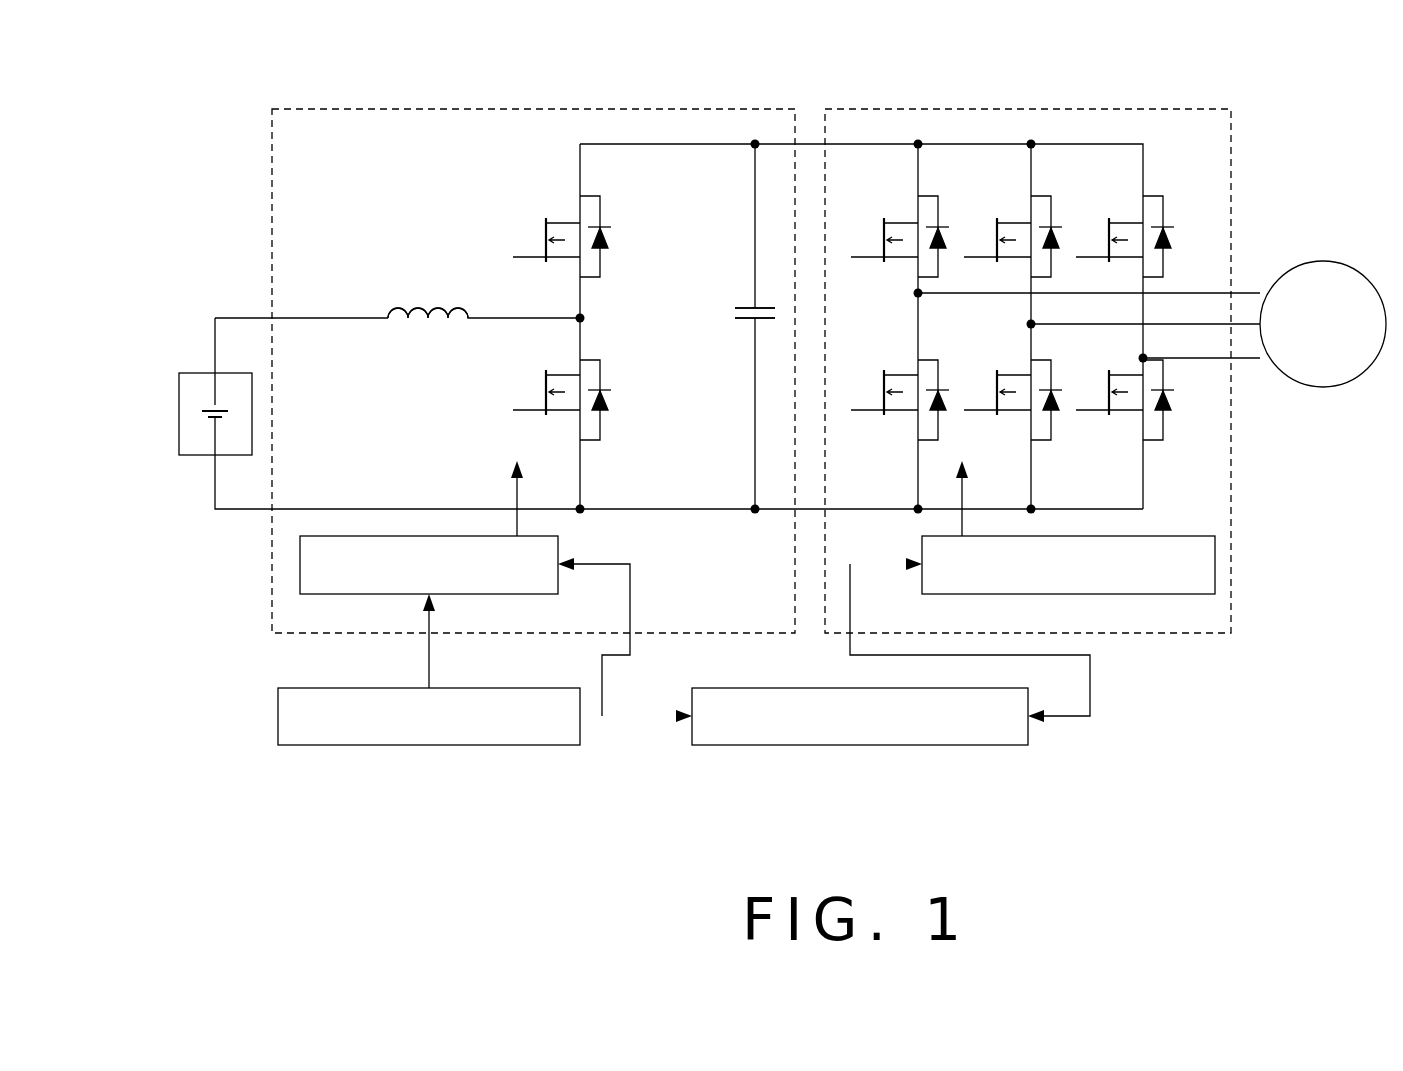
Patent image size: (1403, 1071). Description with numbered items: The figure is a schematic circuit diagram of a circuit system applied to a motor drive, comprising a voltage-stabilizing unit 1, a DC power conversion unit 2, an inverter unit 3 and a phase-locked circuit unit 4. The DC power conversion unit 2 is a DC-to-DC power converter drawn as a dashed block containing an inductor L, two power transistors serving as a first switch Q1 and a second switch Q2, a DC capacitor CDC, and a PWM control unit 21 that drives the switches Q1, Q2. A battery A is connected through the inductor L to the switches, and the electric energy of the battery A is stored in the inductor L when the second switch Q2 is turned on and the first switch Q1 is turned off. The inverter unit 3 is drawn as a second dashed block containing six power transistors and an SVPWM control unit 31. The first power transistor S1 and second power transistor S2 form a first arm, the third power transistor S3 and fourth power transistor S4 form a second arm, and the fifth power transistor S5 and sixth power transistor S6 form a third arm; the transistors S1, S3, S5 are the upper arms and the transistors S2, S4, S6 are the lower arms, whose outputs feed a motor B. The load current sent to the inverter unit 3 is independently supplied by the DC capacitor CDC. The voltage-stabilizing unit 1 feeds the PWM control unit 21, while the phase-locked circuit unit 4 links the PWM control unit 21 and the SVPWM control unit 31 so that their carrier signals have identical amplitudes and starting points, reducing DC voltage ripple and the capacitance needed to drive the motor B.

The voltage-stabilizing unit 1 is at (352, 748).
The DC power conversion unit 2 is at (408, 108).
The inverter unit 3 is at (1130, 108).
The phase-locked circuit unit 4 is at (740, 748).
The PWM control unit 21 is at (285, 568).
The SVPWM control unit 31 is at (1146, 598).
The battery A is at (178, 412).
The motor B is at (1350, 270).
The inductor L is at (428, 330).
The DC capacitor CDC is at (740, 296).
The first switch Q1 is at (562, 236).
The second switch Q2 is at (562, 400).
The first power transistor S1 is at (900, 236).
The second power transistor S2 is at (900, 400).
The third power transistor S3 is at (1013, 236).
The fourth power transistor S4 is at (1013, 400).
The fifth power transistor S5 is at (1125, 236).
The sixth power transistor S6 is at (1125, 400).